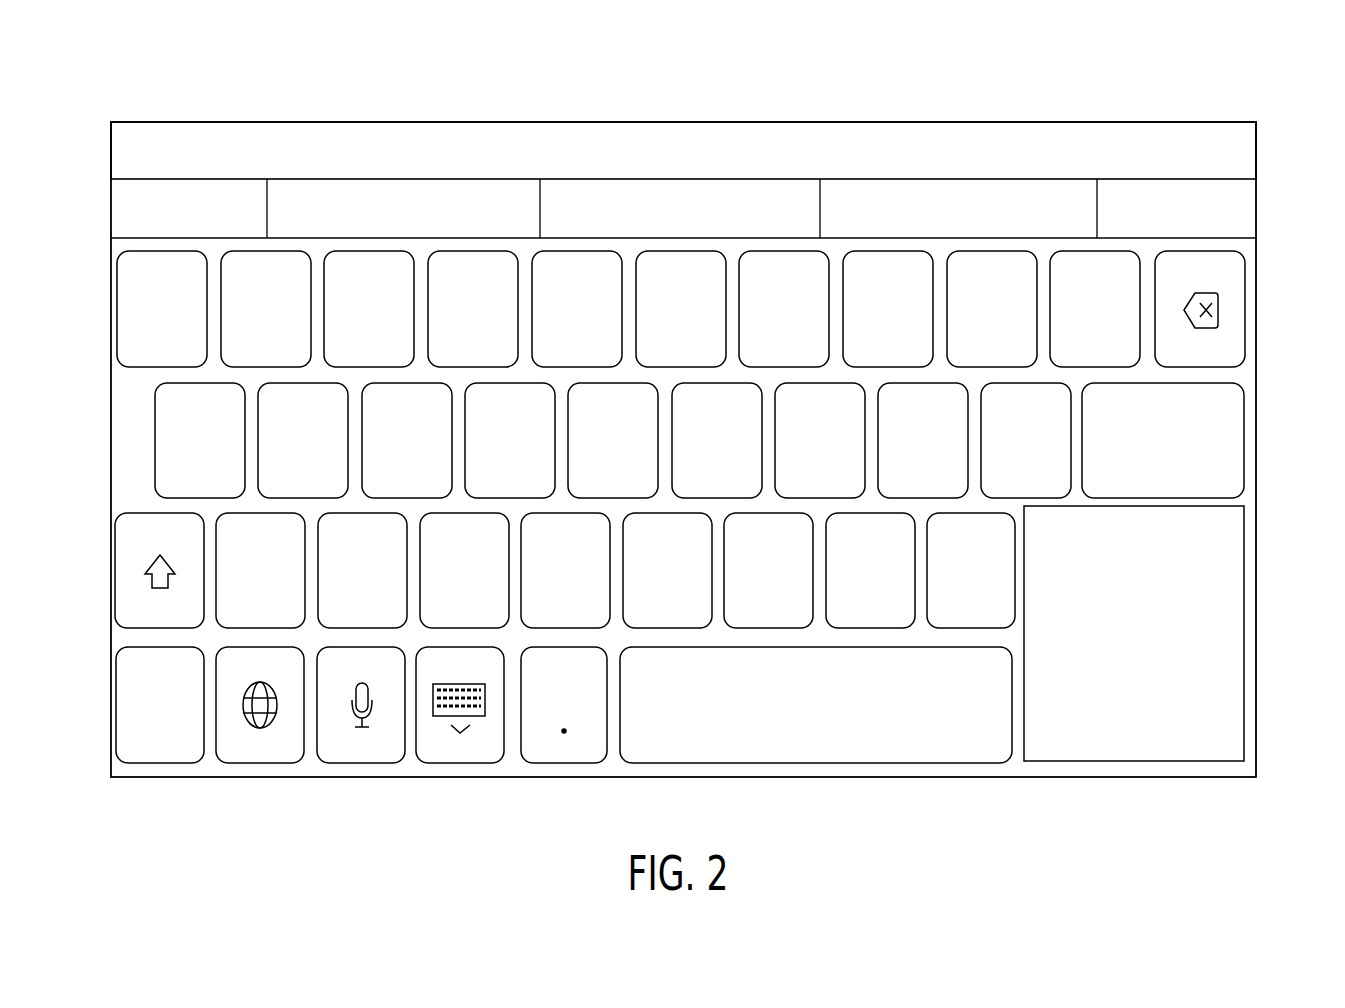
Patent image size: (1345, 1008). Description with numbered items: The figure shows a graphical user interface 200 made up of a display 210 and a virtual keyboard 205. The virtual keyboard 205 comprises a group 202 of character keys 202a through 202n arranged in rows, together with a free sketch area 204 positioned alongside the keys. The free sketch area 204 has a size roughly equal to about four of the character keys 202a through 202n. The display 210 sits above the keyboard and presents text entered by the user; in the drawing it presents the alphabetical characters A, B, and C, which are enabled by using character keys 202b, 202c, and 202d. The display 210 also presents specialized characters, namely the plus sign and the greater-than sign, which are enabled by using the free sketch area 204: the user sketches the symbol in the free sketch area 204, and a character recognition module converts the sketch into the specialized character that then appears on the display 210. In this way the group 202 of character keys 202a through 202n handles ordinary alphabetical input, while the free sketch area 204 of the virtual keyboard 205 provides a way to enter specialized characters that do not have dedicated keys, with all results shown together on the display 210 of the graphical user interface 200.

The graphical user interface 200 is at (92, 102).
The group of character keys 202 is at (84, 276).
The character key 202a is at (117, 342).
The character key 202b is at (155, 437).
The character key 202c is at (652, 630).
The character key 202d is at (438, 630).
The character key 202n is at (563, 763).
The free sketch area 204 is at (1131, 761).
The virtual keyboard 205 is at (1267, 273).
The display 210 is at (1257, 153).